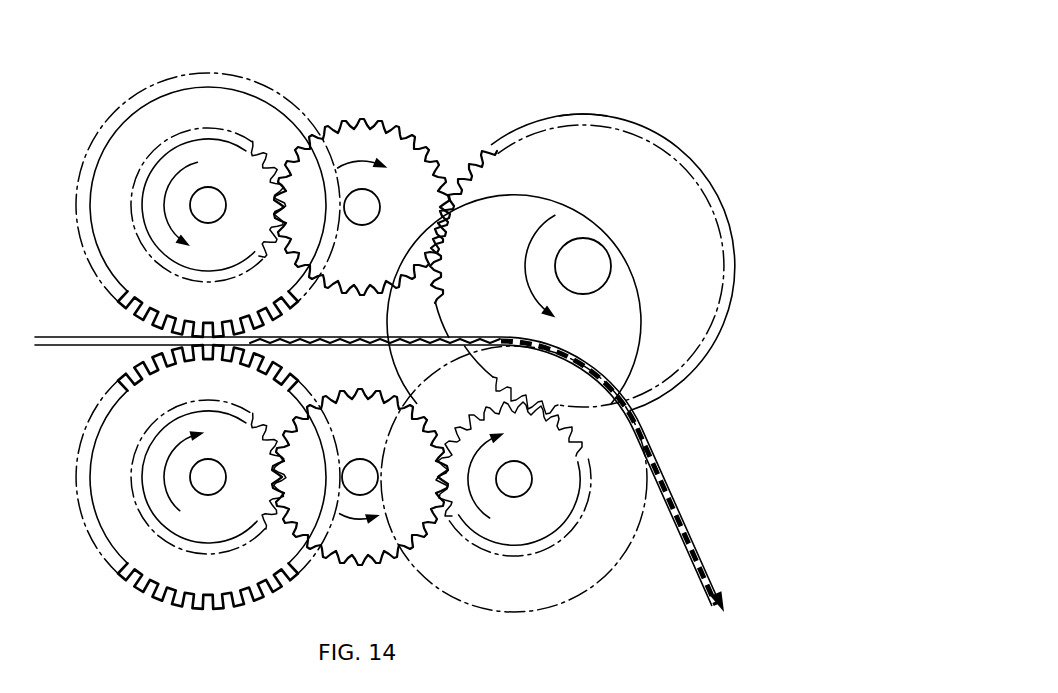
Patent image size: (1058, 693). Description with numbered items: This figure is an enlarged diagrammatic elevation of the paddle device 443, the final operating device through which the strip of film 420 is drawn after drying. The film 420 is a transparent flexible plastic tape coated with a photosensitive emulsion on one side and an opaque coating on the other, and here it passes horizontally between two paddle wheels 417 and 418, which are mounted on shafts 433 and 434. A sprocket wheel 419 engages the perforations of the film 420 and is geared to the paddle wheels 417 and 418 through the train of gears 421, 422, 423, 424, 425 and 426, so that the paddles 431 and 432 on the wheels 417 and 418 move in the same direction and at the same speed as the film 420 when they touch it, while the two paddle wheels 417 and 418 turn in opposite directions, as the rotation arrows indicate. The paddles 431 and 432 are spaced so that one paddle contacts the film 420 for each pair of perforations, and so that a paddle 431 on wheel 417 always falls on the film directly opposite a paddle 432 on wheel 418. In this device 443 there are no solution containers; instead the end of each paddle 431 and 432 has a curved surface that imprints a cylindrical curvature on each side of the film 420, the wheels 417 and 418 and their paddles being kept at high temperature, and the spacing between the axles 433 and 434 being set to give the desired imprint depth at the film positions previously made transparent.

The paddle wheel 417 is at (184, 477).
The paddle wheel 418 is at (185, 205).
The sprocket wheel 419 is at (514, 403).
The strip of film 420 is at (74, 346).
The gear 421 is at (505, 545).
The gear 422 is at (657, 177).
The gear 423 is at (393, 147).
The gear 424 is at (247, 147).
The gear 425 is at (350, 535).
The gear 426 is at (221, 545).
The paddle 431 is at (210, 346).
The paddle 432 is at (208, 330).
The shaft 433 is at (207, 496).
The shaft 434 is at (209, 188).
The paddle device 443 is at (582, 110).